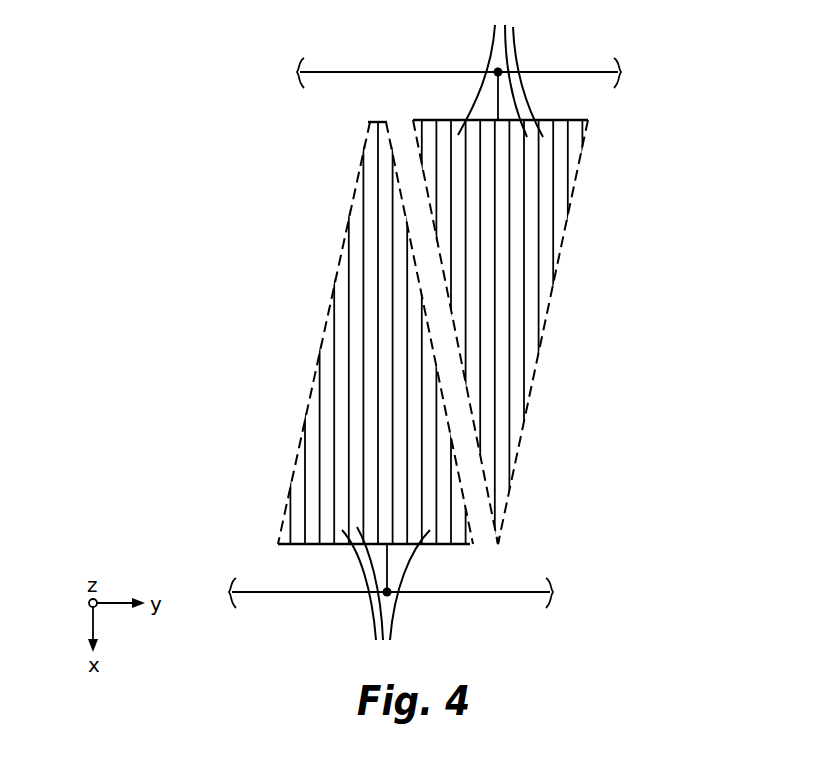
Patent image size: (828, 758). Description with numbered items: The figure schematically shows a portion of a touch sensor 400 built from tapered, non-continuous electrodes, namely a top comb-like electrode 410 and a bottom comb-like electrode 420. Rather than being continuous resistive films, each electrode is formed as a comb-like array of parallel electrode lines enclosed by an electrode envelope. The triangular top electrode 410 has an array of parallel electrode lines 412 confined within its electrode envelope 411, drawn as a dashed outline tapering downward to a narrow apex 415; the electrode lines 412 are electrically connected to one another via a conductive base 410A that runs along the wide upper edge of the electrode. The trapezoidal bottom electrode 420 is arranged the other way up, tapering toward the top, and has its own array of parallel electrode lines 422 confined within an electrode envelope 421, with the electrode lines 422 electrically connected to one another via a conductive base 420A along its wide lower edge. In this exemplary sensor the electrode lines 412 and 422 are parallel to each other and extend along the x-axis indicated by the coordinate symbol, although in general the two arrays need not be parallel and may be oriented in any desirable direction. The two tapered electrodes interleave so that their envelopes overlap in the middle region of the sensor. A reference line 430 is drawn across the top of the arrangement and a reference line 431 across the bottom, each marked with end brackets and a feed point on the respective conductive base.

The antenna assembly 400 is at (250, 116).
The top comb-like electrode 410 is at (537, 213).
The conductive base 410A is at (435, 120).
The electrode envelope 411 is at (552, 282).
The parallel electrode lines 412 is at (500, 68).
The apex of first antenna element 415 is at (557, 538).
The bottom comb-like electrode 420 is at (332, 368).
The conductive base 420A is at (450, 544).
The electrode envelope 421 is at (333, 283).
The parallel electrode lines 422 is at (386, 600).
The first reference plane / width dimension 430 is at (570, 72).
The second reference plane / width dimension 431 is at (317, 592).